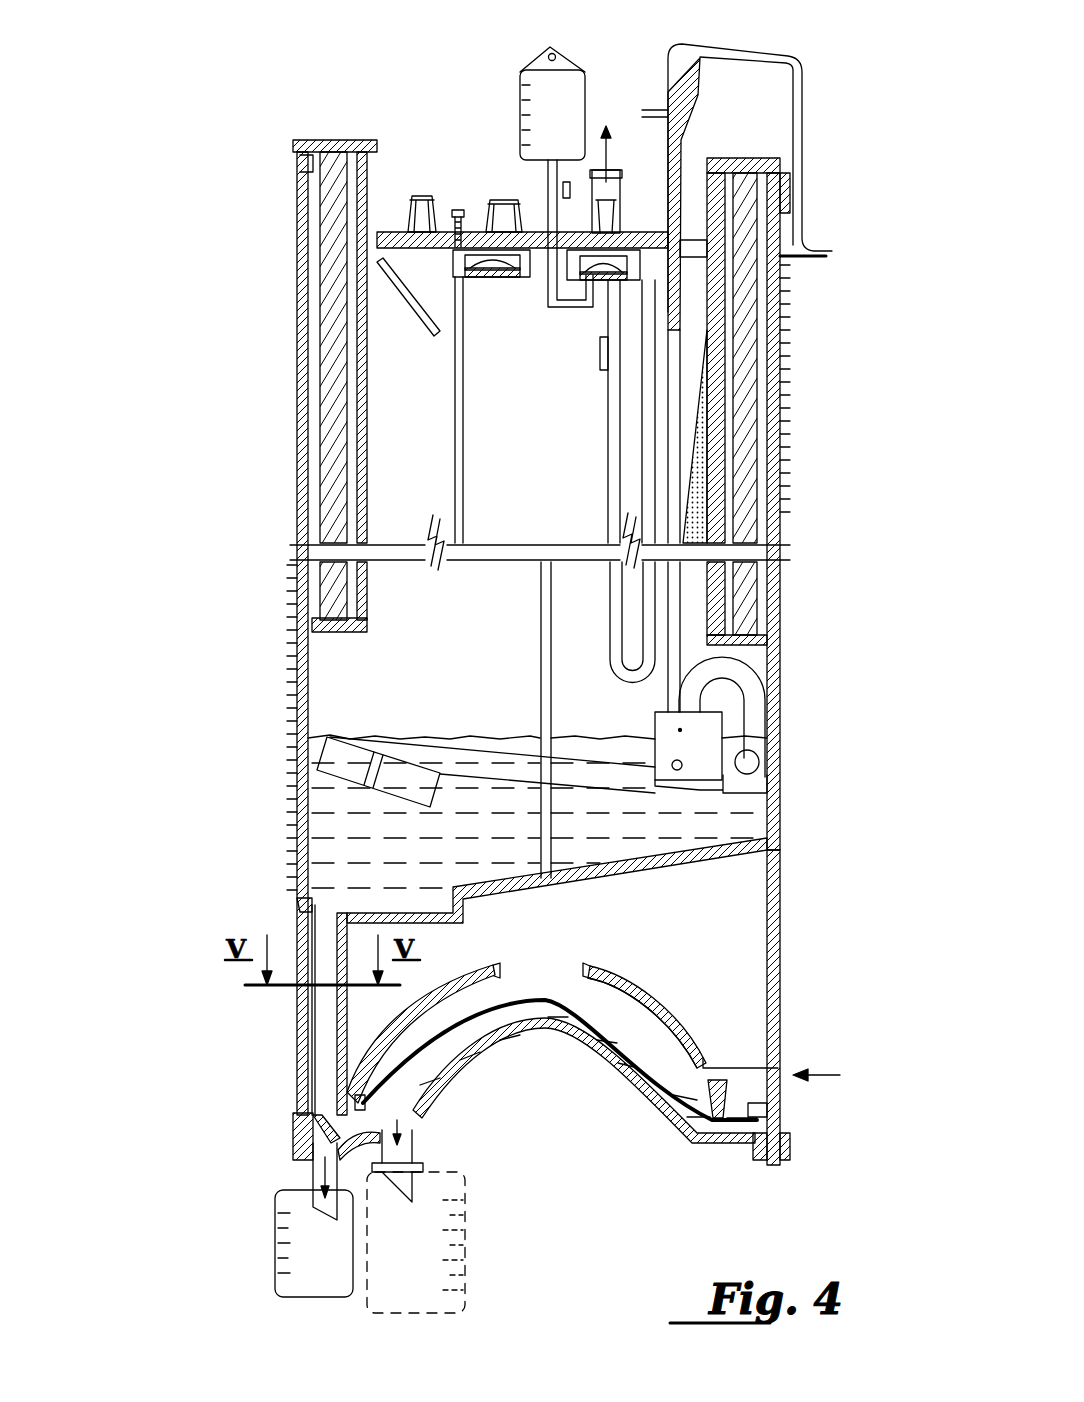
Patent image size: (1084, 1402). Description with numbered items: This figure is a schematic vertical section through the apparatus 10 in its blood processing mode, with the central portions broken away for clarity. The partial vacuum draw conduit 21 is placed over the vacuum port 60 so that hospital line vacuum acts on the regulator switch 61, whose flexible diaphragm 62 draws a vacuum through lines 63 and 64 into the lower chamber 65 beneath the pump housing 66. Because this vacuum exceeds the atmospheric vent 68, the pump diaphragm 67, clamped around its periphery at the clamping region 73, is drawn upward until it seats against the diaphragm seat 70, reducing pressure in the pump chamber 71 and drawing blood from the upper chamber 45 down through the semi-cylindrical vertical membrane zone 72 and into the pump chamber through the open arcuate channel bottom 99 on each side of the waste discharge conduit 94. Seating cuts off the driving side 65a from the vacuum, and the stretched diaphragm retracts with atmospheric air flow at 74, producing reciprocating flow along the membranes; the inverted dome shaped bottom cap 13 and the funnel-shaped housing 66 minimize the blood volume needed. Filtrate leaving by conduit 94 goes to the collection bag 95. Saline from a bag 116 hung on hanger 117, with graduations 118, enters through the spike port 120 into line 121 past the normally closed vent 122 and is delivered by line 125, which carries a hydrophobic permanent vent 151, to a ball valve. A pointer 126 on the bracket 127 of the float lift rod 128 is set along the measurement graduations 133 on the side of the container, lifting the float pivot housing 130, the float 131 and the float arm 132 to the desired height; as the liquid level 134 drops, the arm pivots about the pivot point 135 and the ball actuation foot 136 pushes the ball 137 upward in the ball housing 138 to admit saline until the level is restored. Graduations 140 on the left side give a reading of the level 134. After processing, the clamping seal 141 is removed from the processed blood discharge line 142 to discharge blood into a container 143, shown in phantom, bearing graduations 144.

The apparatus 10 is at (794, 492).
The dome shaped bottom cap 13 is at (597, 1045).
The partial vacuum draw conduit 21 is at (618, 176).
The upper chamber 45 is at (507, 658).
The vacuum port 60 is at (622, 215).
The regulator switch 61 is at (575, 279).
The flexible diaphragm 62 is at (600, 267).
The vacuum line 63 is at (695, 436).
The vacuum line 64 is at (648, 402).
The lower chamber 65 is at (737, 917).
The driving side 65a is at (647, 1017).
The pump housing 66 is at (738, 846).
The pump diaphragm 67 is at (600, 1007).
The atmospheric vent 68 is at (737, 1062).
The diaphragm seat 70 is at (503, 981).
The pump chamber 71 is at (660, 1080).
The vertical membrane zone 72 is at (306, 907).
The diaphragm periphery clamp 73 is at (352, 1096).
The atmospheric air flow 74 is at (840, 1075).
The waste discharge conduit 94 is at (313, 1170).
The collection bag 95 is at (320, 1274).
The open arcuate channel bottom 99 is at (295, 1150).
The saline bag 116 is at (580, 77).
The hanger 117 is at (548, 52).
The graduations 118 is at (526, 105).
The spike port 120 is at (548, 164).
The saline line 121 is at (548, 185).
The normally closed vent 122 is at (586, 167).
The saline line 125 is at (610, 642).
The pointer 126 is at (812, 252).
The bracket 127 is at (760, 50).
The float lift rod 128 is at (684, 141).
The float pivot housing 130 is at (670, 730).
The float 131 is at (340, 758).
The float arm 132 is at (457, 758).
The measurement graduations 133 is at (784, 356).
The liquid level 134 is at (357, 736).
The pivot point 135 is at (677, 770).
The ball actuation foot 136 is at (727, 790).
The ball 137 is at (750, 761).
The ball housing 138 is at (753, 723).
The graduations 140 is at (292, 826).
The clamping seal 141 is at (423, 1164).
The processed blood discharge line 142 is at (403, 1127).
The container 143 is at (423, 1230).
The graduations 144 is at (447, 1254).
The permanent vent 151 is at (600, 366).